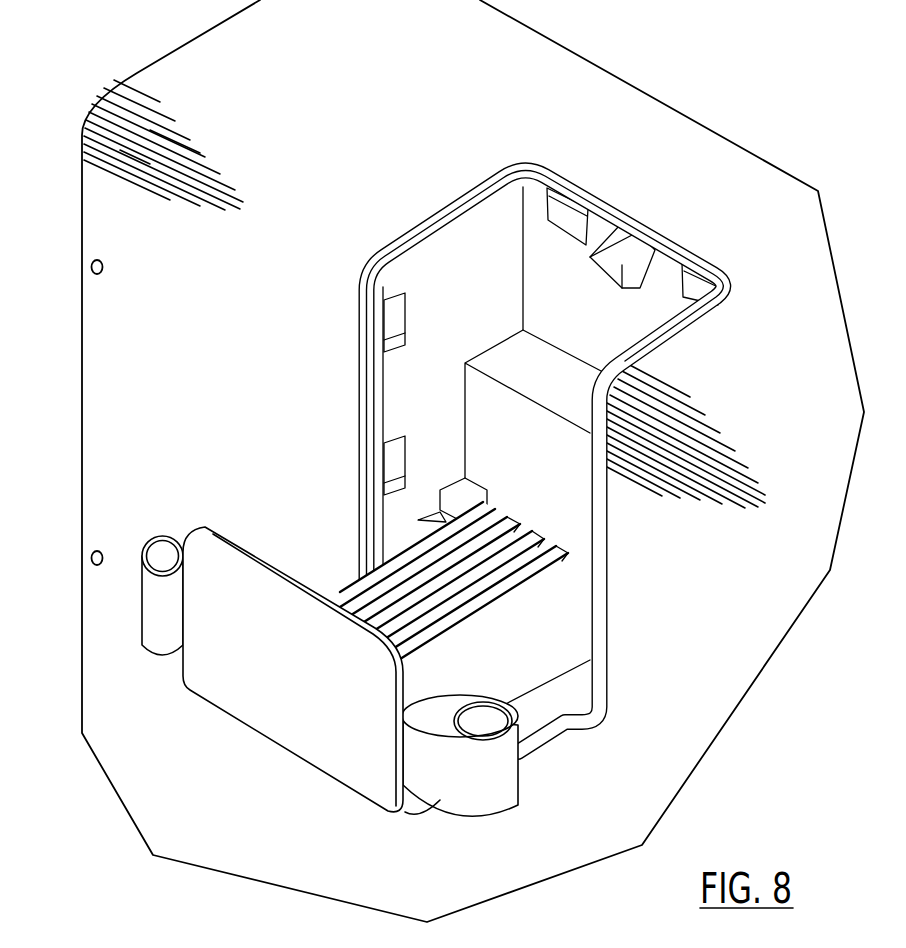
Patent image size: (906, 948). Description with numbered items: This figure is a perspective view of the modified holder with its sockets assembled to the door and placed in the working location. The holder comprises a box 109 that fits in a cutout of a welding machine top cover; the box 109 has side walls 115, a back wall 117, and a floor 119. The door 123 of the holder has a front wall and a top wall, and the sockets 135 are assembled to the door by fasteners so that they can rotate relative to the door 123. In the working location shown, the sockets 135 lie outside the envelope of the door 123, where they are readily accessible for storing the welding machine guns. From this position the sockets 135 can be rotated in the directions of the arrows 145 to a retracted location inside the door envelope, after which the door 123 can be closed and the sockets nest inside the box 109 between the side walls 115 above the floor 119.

The box 109 is at (612, 537).
The side walls 115 is at (441, 258).
The back wall 117 is at (602, 233).
The floor 119 is at (540, 388).
The door 123 is at (272, 758).
The sockets 135 is at (140, 627).
The arrows 145 is at (190, 478).